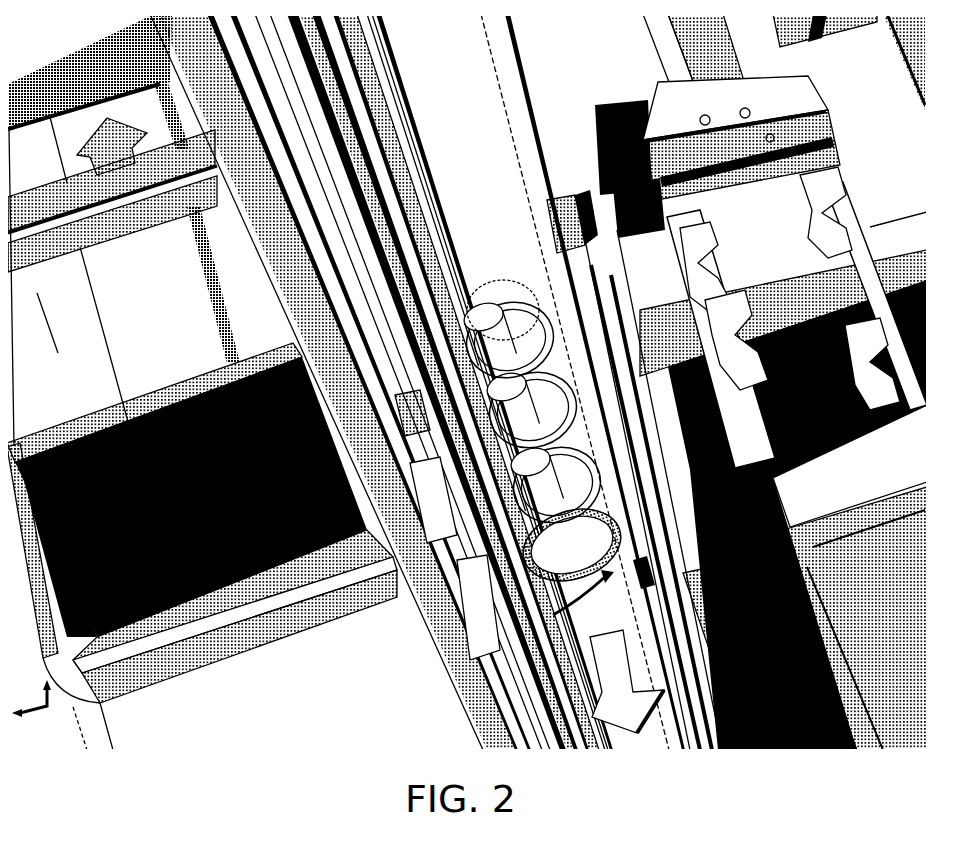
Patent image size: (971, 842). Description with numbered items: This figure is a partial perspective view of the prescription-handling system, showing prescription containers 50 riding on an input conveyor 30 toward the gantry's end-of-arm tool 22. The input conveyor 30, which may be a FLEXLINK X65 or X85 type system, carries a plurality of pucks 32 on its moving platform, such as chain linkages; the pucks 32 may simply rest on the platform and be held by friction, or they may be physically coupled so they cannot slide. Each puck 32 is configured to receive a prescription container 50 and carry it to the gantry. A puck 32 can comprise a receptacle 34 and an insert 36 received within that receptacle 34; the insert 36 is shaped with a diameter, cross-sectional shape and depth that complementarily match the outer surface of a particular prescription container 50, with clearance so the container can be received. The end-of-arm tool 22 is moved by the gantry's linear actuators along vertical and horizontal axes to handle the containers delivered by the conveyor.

The end-of-arm tool 22 is at (838, 190).
The input conveyor 30 is at (467, 125).
The puck 32 is at (527, 288).
The receptacle 34 is at (580, 355).
The insert 36 is at (545, 330).
The prescription container 50 is at (483, 285).